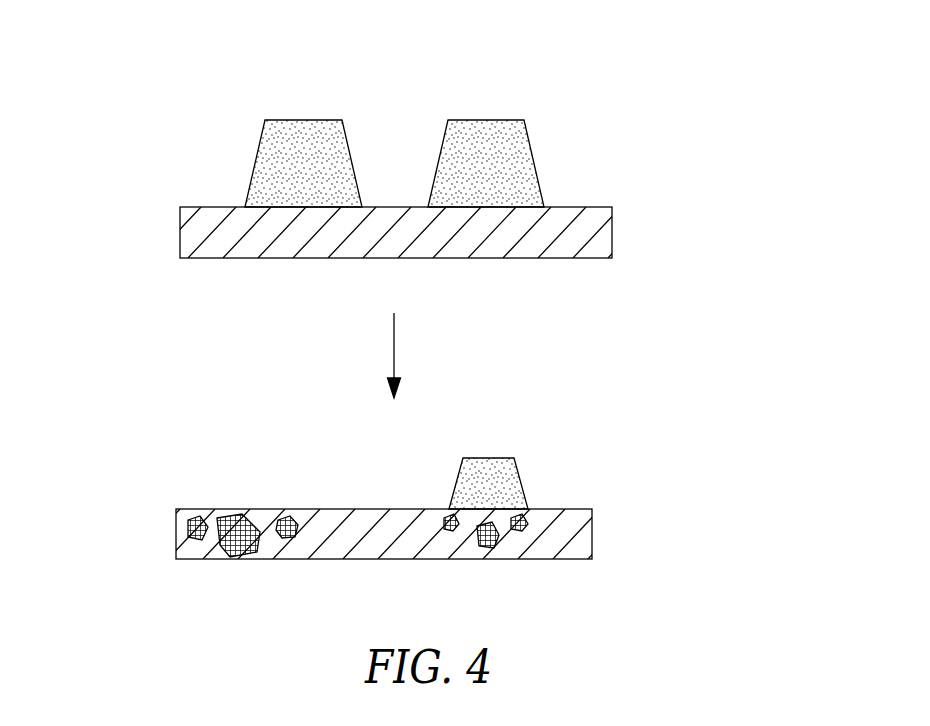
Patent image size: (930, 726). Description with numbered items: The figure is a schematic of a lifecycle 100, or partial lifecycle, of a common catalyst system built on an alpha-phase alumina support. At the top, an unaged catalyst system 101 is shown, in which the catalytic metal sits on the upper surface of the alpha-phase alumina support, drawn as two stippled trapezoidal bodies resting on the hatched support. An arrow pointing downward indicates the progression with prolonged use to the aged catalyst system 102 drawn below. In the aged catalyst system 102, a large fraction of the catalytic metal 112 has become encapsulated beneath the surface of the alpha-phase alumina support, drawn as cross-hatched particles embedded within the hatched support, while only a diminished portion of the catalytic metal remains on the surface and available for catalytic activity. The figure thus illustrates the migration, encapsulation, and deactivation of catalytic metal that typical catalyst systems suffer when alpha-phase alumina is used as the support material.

The lifecycle 100 is at (435, 155).
The unaged catalyst system 101 is at (371, 155).
The aged catalyst system 102 is at (351, 501).
The encapsulated catalytic metal 112 is at (278, 522).